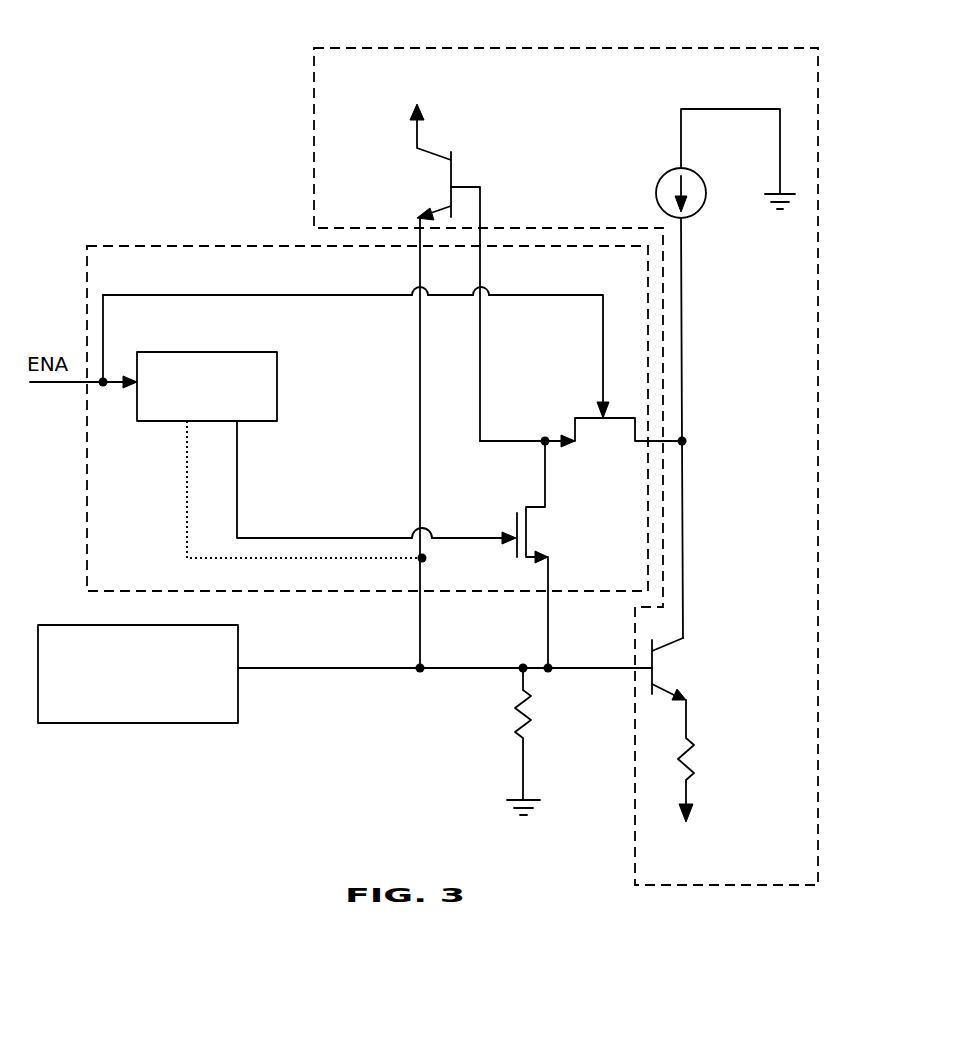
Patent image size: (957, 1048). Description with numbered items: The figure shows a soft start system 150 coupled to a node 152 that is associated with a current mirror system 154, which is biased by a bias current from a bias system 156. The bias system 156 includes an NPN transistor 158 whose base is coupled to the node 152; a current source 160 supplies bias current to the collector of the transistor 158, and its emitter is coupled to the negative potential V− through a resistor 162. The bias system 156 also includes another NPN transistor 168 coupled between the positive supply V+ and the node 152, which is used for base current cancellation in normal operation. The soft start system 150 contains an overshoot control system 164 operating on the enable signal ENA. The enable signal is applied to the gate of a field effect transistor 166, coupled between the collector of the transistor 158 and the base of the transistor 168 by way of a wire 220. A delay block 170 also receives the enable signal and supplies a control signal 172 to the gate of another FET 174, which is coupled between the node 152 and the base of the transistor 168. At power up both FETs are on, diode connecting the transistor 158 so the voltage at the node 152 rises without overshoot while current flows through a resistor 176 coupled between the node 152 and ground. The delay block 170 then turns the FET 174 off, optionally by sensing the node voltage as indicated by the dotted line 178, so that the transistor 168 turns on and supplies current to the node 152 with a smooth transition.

The soft start system 150 is at (143, 212).
The node 152 is at (335, 668).
The current mirror system 154 is at (157, 723).
The bias system 156 is at (540, 44).
The NPN transistor 158 is at (700, 642).
The current source 160 is at (655, 190).
The resistor 162 is at (690, 753).
The overshoot control system 164 is at (204, 246).
The field effect transistor 166 is at (598, 460).
The NPN transistor 168 is at (408, 167).
The delay block 170 is at (242, 352).
The control signal 172 is at (327, 538).
The FET 174 is at (565, 530).
The resistor 176 is at (515, 710).
The dotted line 178 is at (187, 492).
The wire 220 is at (505, 295).